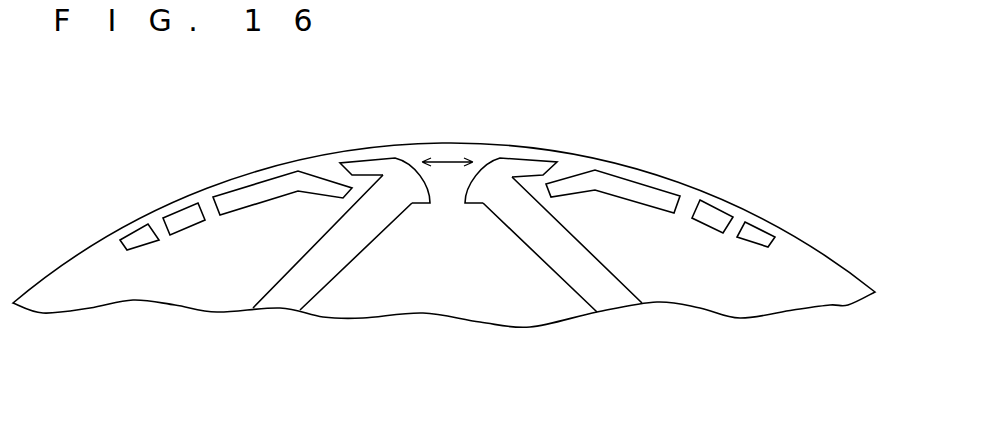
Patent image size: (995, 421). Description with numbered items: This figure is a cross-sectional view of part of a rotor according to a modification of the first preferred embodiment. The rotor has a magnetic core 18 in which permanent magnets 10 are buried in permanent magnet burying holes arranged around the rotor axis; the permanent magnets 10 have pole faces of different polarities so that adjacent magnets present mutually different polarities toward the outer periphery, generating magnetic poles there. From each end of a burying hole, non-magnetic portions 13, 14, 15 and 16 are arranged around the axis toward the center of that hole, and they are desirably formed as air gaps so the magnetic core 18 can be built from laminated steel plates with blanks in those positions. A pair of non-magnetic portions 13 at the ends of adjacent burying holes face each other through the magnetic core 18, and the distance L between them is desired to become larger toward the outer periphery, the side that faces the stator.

The permanent magnet 10 is at (318, 272).
The non-magnetic portion 13 is at (400, 167).
The non-magnetic portion 14 is at (282, 167).
The non-magnetic portion 15 is at (180, 213).
The non-magnetic portion 16 is at (137, 238).
The magnetic core 18 is at (817, 260).
The distance L is at (445, 145).